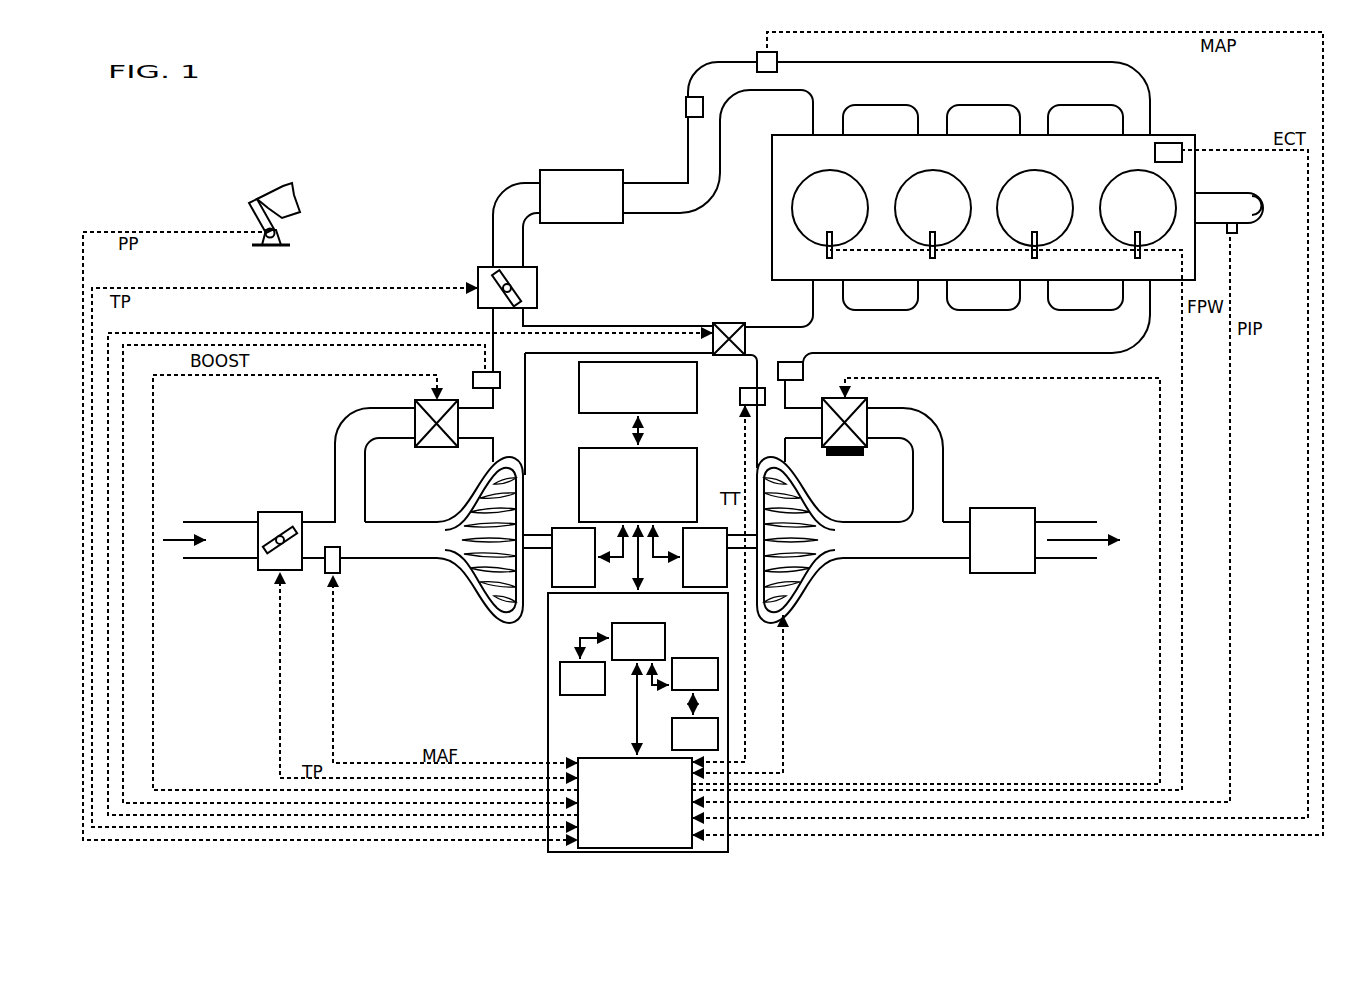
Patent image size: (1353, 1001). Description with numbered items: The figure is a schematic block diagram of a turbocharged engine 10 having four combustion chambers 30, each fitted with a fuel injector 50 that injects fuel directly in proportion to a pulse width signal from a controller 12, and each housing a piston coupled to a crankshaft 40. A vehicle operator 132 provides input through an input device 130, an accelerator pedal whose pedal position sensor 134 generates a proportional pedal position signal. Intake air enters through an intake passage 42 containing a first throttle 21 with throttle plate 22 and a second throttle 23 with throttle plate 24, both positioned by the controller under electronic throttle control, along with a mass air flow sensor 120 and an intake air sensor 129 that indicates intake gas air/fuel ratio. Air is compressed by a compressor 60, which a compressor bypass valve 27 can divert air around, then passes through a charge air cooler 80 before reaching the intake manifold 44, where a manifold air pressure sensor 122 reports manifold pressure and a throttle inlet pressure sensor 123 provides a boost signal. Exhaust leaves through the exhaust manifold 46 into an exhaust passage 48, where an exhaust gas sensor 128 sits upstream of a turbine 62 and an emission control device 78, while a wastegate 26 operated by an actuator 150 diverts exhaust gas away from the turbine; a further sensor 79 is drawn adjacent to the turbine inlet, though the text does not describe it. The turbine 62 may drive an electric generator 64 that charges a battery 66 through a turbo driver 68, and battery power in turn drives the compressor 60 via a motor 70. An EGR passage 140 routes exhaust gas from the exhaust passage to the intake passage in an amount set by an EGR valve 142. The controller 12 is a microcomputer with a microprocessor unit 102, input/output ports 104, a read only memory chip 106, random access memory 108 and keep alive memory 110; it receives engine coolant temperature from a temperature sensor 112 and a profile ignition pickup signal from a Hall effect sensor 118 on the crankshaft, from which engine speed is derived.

The engine 10 is at (1088, 165).
The controller 12 is at (598, 733).
The throttle 21 is at (273, 512).
The throttle plate 22 is at (289, 528).
The throttle 23 is at (486, 266).
The throttle plate 24 is at (520, 303).
The wastegate 26 is at (867, 406).
The compressor bypass valve 27 is at (415, 408).
The combustion chamber 30 is at (818, 217).
The crankshaft 40 is at (1240, 193).
The intake passage 42 is at (250, 551).
The intake manifold 44 is at (866, 93).
The exhaust manifold 46 is at (841, 345).
The exhaust passage 48 is at (915, 551).
The fuel injector 50 is at (827, 255).
The compressor 60 is at (482, 582).
The turbine 62 is at (793, 500).
The electric generator 64 is at (717, 566).
The battery 66 is at (579, 395).
The turbo driver 68 is at (677, 448).
The motor 70 is at (585, 566).
The emission control device 78 is at (1013, 551).
The turbine temperature sensor 79 is at (742, 394).
The charge air cooler 80 is at (550, 170).
The microprocessor unit 102 is at (607, 632).
The input/output ports 104 is at (683, 833).
The read only memory chip 106 is at (560, 688).
The random access memory 108 is at (676, 658).
The keep alive memory 110 is at (672, 729).
The temperature sensor 112 is at (1168, 143).
The Hall effect sensor 118 is at (1235, 234).
The mass air flow sensor 120 is at (340, 568).
The manifold air pressure sensor 122 is at (759, 55).
The throttle inlet pressure sensor 123 is at (480, 372).
The exhaust gas sensor 128 is at (803, 371).
The intake air sensor 129 is at (686, 102).
The input device 130 is at (252, 213).
The vehicle operator 132 is at (298, 202).
The pedal position sensor 134 is at (278, 233).
The EGR passage 140 is at (618, 326).
The EGR valve 142 is at (733, 322).
The actuator 150 is at (857, 455).